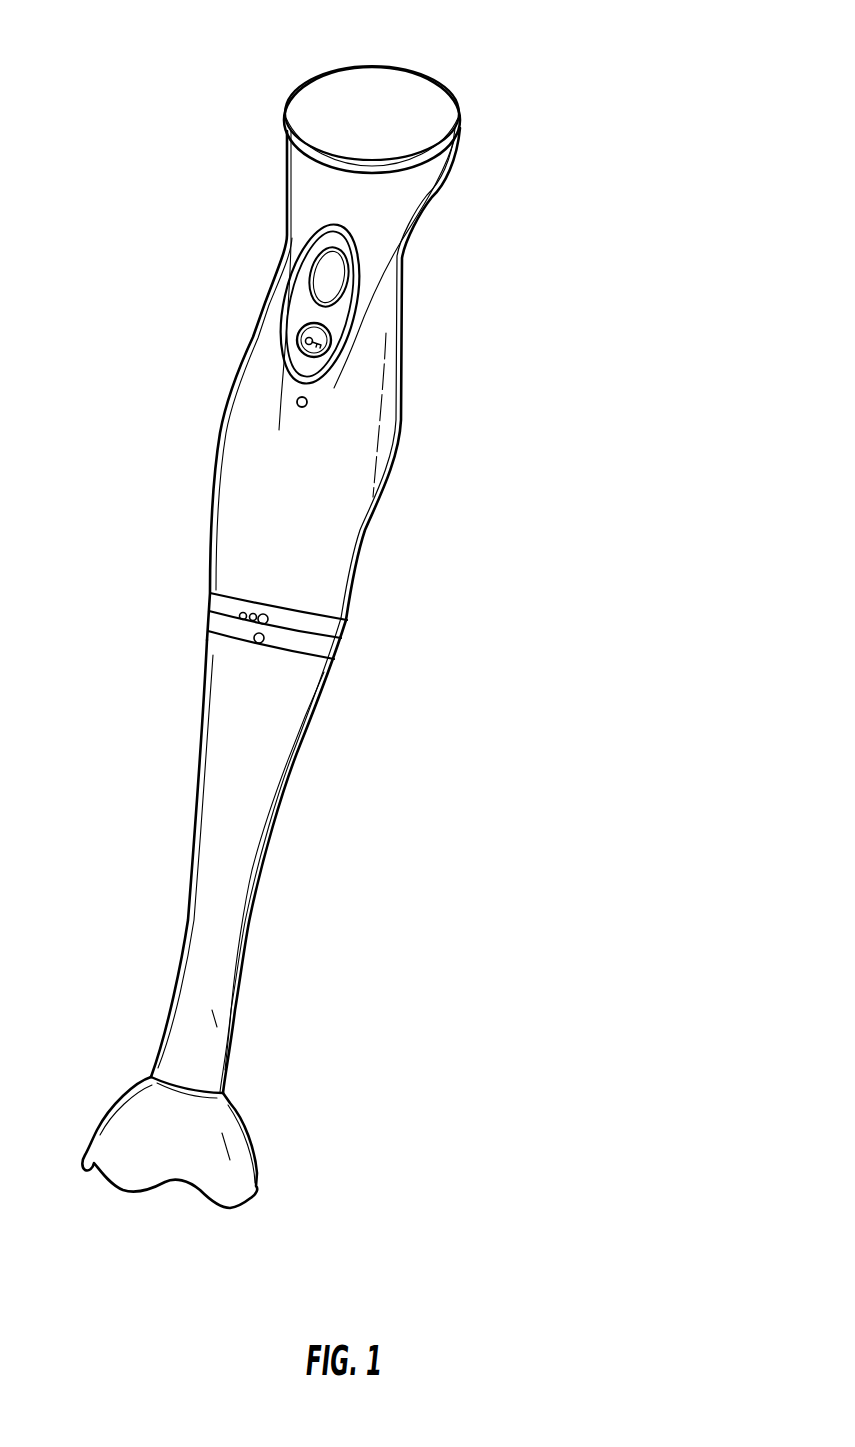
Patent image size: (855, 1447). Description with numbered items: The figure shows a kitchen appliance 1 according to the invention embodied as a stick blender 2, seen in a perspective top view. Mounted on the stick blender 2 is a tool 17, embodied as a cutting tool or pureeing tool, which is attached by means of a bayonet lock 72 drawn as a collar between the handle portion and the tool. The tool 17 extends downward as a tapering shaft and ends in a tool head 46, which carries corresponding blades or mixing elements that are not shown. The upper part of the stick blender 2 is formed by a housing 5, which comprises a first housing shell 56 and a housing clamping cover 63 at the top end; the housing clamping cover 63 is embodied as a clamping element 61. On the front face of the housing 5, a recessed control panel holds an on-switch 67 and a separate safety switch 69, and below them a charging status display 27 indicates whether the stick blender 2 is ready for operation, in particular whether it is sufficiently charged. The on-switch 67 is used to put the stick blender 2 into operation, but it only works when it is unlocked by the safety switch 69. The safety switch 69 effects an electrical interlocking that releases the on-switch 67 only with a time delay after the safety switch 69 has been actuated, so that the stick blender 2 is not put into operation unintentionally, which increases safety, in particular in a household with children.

The kitchen appliance 1 is at (106, 259).
The stick blender 2 is at (373, 462).
The housing 5 is at (230, 537).
The tool 17 is at (265, 777).
The charging status display 27 is at (307, 402).
The tool head 46 is at (233, 1147).
The first housing shell 56 is at (237, 460).
The clamping element 61 is at (433, 118).
The housing clamping cover 63 is at (333, 98).
The on-switch 67 is at (333, 270).
The safety switch 69 is at (322, 337).
The bayonet lock 72 is at (348, 637).